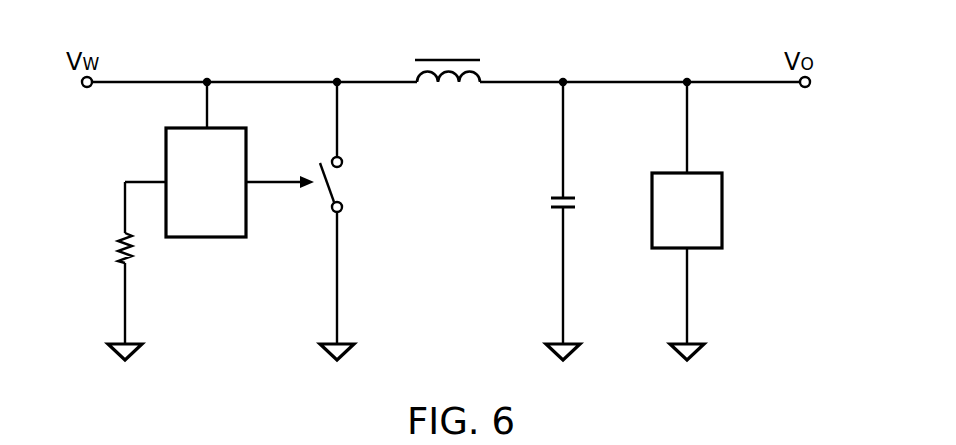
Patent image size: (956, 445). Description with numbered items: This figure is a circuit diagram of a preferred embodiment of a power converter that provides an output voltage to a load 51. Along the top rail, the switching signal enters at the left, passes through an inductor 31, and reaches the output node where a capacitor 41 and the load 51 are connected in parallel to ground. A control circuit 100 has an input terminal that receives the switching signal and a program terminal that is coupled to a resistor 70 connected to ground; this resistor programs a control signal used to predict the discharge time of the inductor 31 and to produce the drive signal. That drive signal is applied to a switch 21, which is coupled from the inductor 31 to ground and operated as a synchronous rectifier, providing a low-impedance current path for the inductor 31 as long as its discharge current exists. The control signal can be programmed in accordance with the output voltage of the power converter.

The control circuit 100 is at (166, 147).
The resistor 70 is at (125, 262).
The switch 21 is at (338, 183).
The inductor 31 is at (478, 80).
The capacitor 41 is at (572, 208).
The load 51 is at (722, 210).